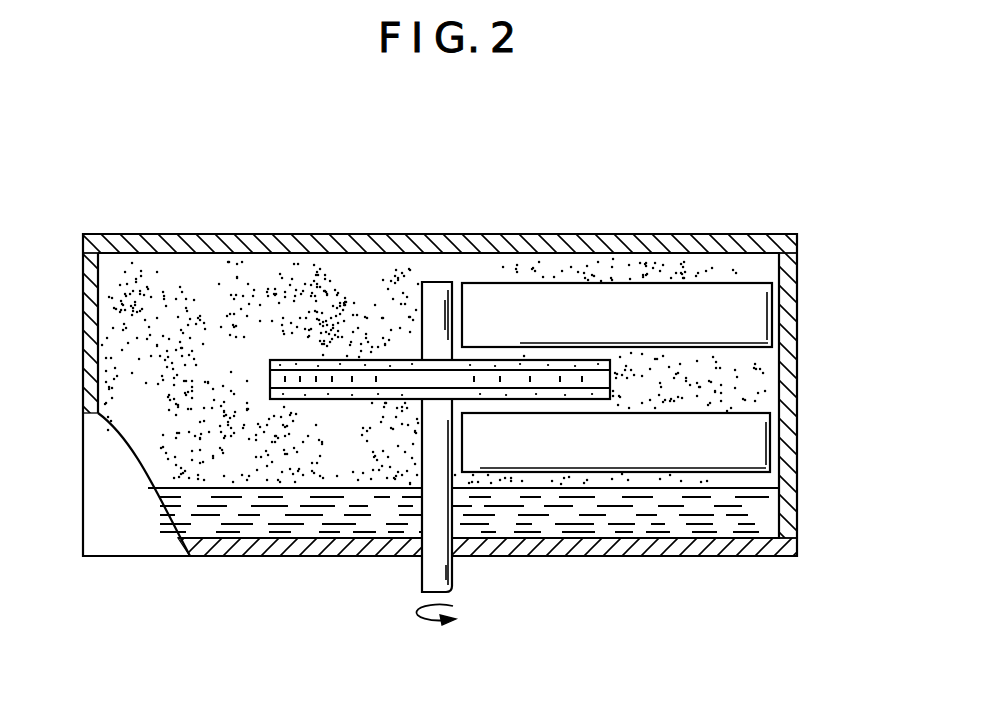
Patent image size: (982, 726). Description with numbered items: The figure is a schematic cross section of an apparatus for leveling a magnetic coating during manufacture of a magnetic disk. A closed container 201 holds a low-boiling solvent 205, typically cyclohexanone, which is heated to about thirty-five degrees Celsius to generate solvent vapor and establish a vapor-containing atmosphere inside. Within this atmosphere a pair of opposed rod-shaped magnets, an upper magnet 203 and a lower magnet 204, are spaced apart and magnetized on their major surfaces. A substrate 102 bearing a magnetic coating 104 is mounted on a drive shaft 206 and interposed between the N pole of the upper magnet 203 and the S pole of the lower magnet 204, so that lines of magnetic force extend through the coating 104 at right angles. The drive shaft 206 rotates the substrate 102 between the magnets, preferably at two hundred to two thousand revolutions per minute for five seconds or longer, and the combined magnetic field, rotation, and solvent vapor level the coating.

The closed container 201 is at (543, 233).
The substrate 102 is at (275, 377).
The magnetic coating 104 is at (318, 360).
The upper magnet 203 is at (755, 302).
The lower magnet 204 is at (755, 432).
The low-boiling solvent 205 is at (683, 523).
The drive shaft 206 is at (423, 575).